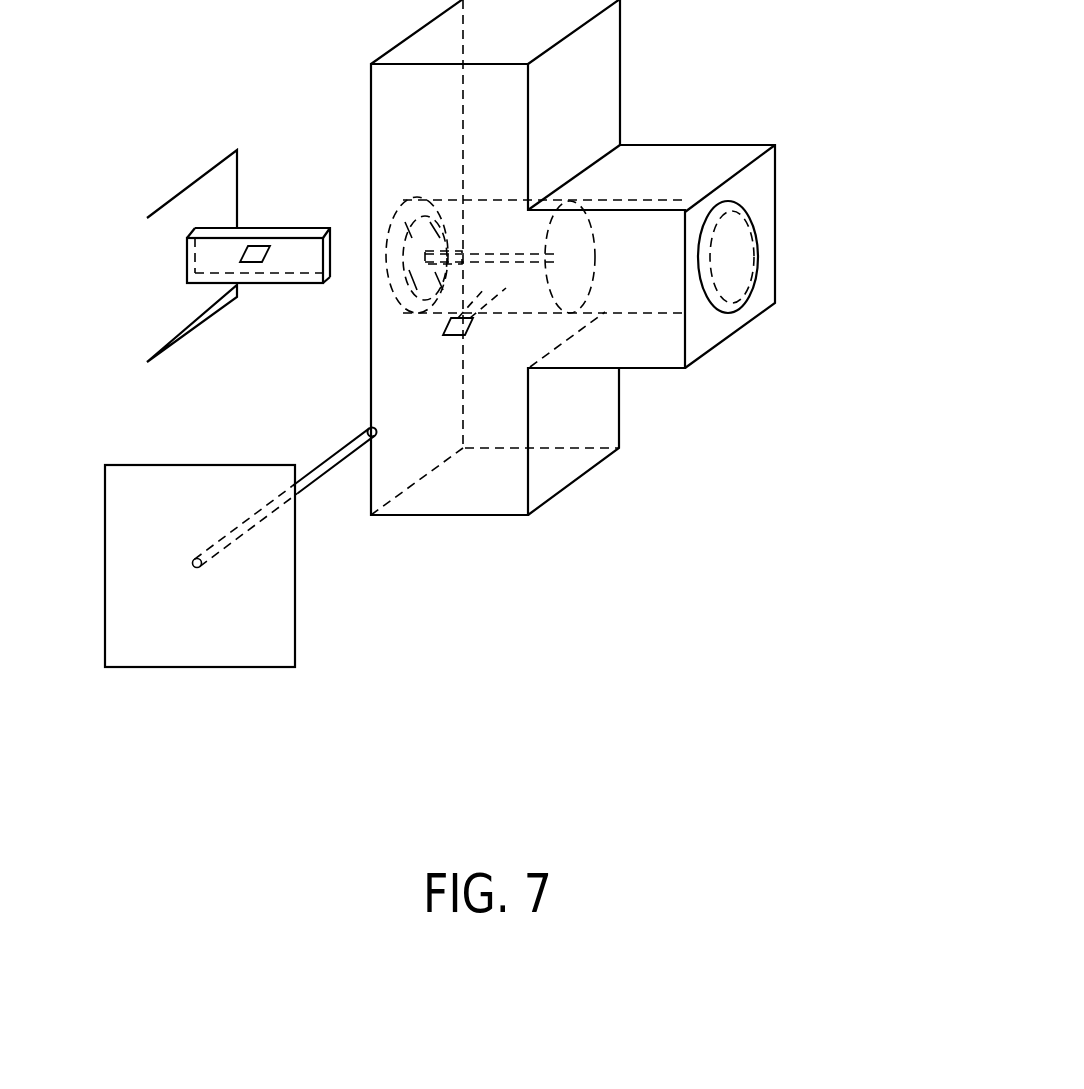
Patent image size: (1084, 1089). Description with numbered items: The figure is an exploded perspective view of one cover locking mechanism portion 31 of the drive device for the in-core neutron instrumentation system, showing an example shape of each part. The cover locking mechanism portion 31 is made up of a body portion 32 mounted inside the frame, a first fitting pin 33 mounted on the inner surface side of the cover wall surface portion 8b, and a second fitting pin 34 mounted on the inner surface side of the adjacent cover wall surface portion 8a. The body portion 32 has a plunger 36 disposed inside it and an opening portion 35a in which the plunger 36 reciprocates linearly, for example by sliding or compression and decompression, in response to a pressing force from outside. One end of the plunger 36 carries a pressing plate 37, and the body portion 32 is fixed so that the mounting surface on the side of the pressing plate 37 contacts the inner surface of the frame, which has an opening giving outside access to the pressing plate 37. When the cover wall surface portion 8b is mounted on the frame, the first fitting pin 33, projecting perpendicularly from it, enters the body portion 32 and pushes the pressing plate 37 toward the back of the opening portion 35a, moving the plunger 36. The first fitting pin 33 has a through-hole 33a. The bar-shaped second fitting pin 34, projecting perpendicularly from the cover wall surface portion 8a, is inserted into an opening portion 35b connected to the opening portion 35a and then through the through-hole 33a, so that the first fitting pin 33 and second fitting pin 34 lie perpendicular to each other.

The cover locking mechanism portion 31 is at (740, 613).
The body portion 32 is at (662, 158).
The first fitting pin 33 is at (262, 230).
The through-hole 33a is at (247, 270).
The second fitting pin 34 is at (315, 480).
The opening portion 35a is at (753, 262).
The opening portion 35b is at (440, 333).
The plunger 36 is at (587, 283).
The pressing plate 37 is at (423, 205).
The cover wall surface portion 8a is at (190, 655).
The cover wall surface portion 8b is at (153, 315).